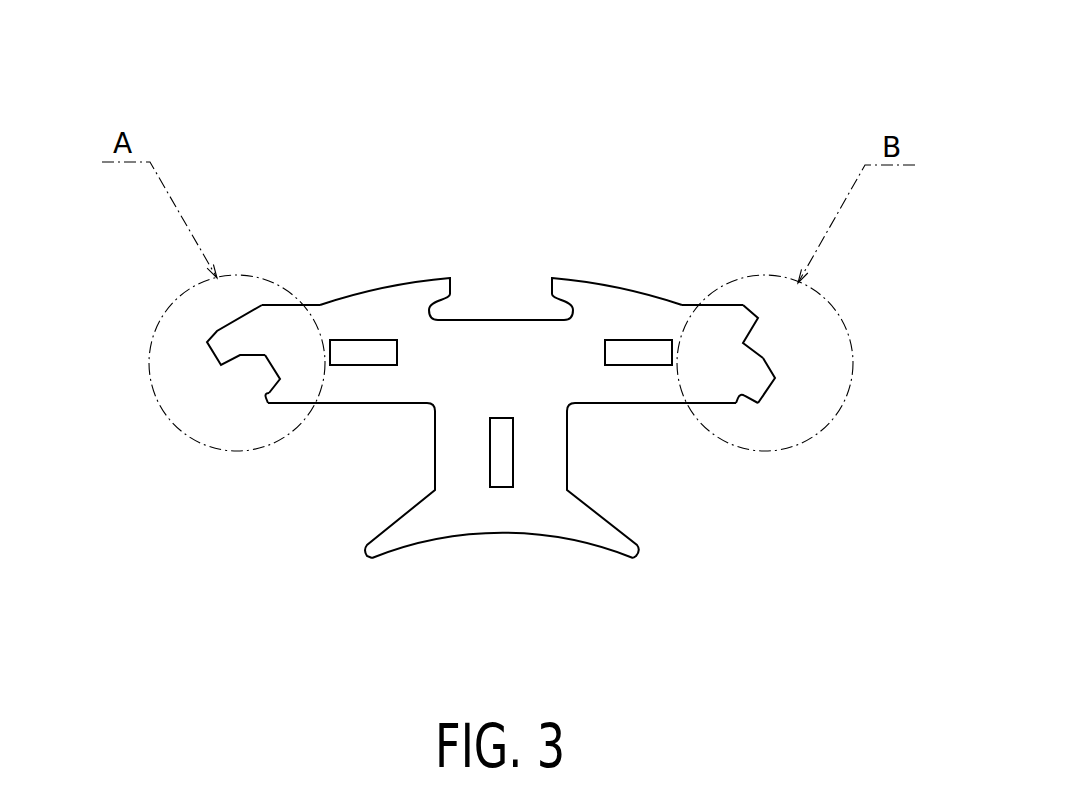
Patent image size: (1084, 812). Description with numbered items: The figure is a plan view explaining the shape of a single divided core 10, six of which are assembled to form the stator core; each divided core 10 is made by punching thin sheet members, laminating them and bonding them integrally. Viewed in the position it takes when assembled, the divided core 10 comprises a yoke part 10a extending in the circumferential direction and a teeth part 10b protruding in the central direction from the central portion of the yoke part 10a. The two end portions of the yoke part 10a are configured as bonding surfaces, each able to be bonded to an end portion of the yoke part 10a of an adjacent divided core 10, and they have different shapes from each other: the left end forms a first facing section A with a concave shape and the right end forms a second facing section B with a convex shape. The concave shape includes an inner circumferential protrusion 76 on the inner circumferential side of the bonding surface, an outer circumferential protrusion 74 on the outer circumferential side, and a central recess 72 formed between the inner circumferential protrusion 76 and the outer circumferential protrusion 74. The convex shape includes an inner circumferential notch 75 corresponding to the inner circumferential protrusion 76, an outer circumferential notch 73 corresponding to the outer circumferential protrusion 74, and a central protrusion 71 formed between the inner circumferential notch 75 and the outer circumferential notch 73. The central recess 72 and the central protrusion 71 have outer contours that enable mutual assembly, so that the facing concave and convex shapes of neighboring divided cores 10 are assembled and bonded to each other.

The divided core 10 is at (547, 112).
The yoke part 10a is at (410, 303).
The teeth part 10b is at (503, 510).
The central protrusion 71 is at (772, 393).
The central recess 72 is at (270, 370).
The outer circumferential notch 73 is at (753, 333).
The outer circumferential protrusion 74 is at (210, 352).
The inner circumferential notch 75 is at (743, 400).
The inner circumferential protrusion 76 is at (265, 400).